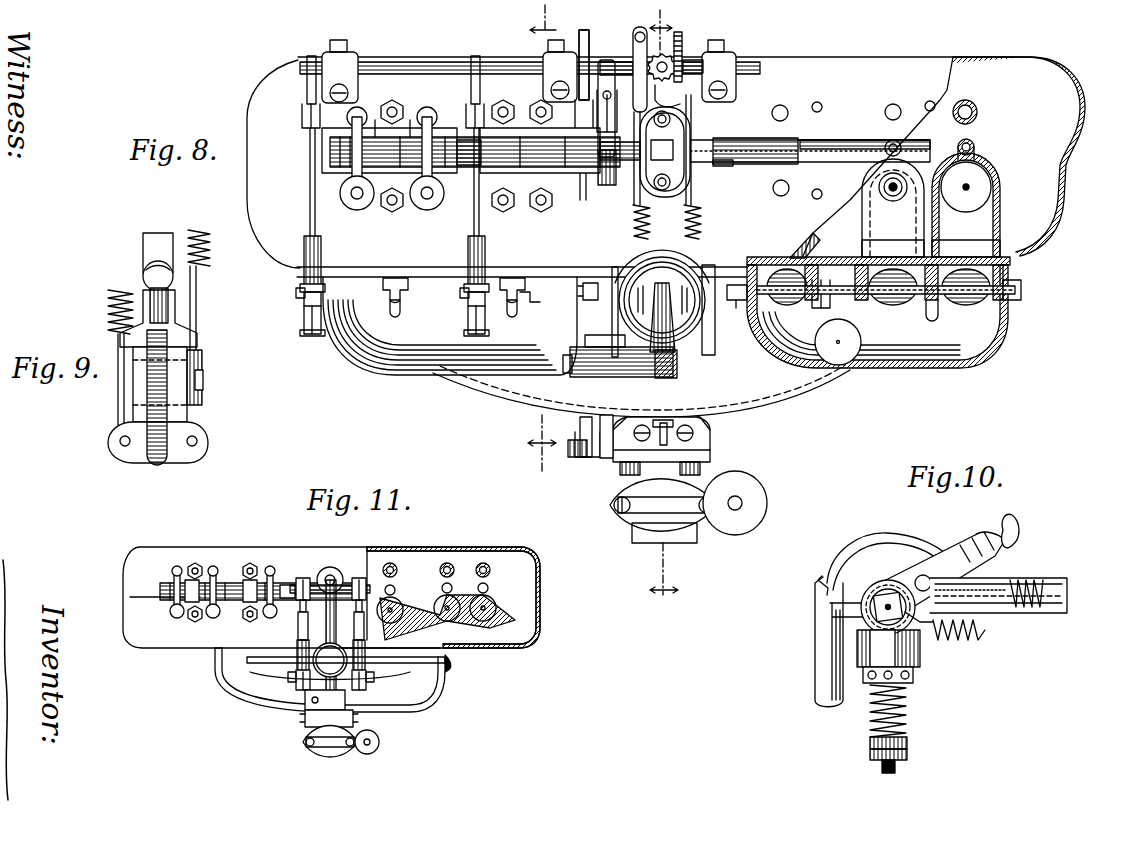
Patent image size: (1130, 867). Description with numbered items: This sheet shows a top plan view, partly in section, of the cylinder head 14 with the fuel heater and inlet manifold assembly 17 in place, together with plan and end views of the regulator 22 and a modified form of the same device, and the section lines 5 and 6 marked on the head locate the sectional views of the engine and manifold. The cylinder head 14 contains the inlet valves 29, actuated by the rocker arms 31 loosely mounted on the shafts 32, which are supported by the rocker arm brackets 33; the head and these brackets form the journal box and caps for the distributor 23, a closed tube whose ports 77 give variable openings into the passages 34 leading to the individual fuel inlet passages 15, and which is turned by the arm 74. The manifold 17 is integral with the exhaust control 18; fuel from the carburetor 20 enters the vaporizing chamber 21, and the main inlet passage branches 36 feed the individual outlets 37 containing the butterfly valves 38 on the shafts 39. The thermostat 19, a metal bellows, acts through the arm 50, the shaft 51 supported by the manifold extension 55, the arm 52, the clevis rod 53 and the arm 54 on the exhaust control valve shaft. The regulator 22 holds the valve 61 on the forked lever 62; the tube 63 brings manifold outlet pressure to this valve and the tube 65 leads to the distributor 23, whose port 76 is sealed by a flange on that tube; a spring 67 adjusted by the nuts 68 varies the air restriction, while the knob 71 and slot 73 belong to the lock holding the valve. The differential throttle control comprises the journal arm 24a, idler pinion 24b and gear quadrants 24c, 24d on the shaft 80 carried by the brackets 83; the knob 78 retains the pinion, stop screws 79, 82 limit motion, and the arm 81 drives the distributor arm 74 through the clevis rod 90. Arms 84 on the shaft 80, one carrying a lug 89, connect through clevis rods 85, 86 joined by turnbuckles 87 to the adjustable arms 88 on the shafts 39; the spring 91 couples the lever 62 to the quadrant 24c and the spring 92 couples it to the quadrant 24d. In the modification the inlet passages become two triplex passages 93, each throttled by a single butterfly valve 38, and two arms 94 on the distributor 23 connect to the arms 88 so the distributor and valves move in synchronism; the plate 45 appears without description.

In FIG. 8, the section line 5— 5 is at (664, 310).
In FIG. 8, the section line 6— 6 is at (542, 238).
In FIG. 8, the cylinder head 14 is at (865, 89).
In FIG. 11, the cylinder head 14 is at (347, 558).
In FIG. 8, the individual fuel inlet passages 15 is at (690, 180).
In FIG. 8, the fuel heater and inlet manifold assembly 17 is at (662, 417).
In FIG. 8, the exhaust control 18 is at (710, 338).
In FIG. 8, the thermostat 19 is at (662, 296).
In FIG. 11, the thermostat 19 is at (330, 660).
In FIG. 8, the carburetor 20 is at (688, 507).
In FIG. 11, the carburetor 20 is at (325, 758).
In FIG. 8, the vaporizing chamber 21 is at (710, 425).
In FIG. 8, the regulator 22 is at (665, 420).
In FIG. 10, the regulator 22 is at (886, 561).
In FIG. 11, the regulator 22 is at (308, 727).
In FIG. 8, the distributor 23 is at (748, 139).
In FIG. 11, the distributor 23 is at (288, 585).
In FIG. 8, the journal arm 24a is at (680, 104).
In FIG. 8, the idler pinion 24b is at (680, 33).
In FIG. 8, the gear quadrant 24c is at (615, 62).
In FIG. 8, the gear quadrant 24d is at (692, 60).
In FIG. 8, the inlet valves 29 is at (964, 174).
In FIG. 11, the inlet valves 29 is at (396, 612).
In FIG. 8, the rocker arms 31 is at (360, 108).
In FIG. 11, the rocker arms 31 is at (177, 565).
In FIG. 8, the shafts 32 is at (468, 151).
In FIG. 8, the rocker arm brackets 33 is at (452, 208).
In FIG. 11, the rocker arm brackets 33 is at (223, 580).
In FIG. 8, the passages 34 is at (890, 140).
In FIG. 11, the passages 34 is at (396, 590).
In FIG. 8, the main inlet passage branches 36 is at (462, 386).
In FIG. 11, the main inlet passage branches 36 is at (246, 690).
In FIG. 8, the individual outlets 37 is at (360, 290).
In FIG. 8, the butterfly valves 38 is at (955, 305).
In FIG. 11, the butterfly valves 38 is at (449, 665).
In FIG. 8, the shafts 39 is at (905, 303).
In FIG. 11, the shafts 39 is at (238, 680).
In FIG. 8, the plate 45 is at (606, 460).
In FIG. 8, the arm 50 is at (672, 317).
In FIG. 8, the shaft 51 is at (678, 365).
In FIG. 8, the arm 52 is at (567, 373).
In FIG. 11, the arm 52 is at (305, 700).
In FIG. 8, the clevis rod 53 is at (580, 421).
In FIG. 8, the arm 54 is at (578, 457).
In FIG. 8, the manifold extension 55 is at (621, 356).
In FIG. 8, the valve 61 is at (605, 93).
In FIG. 10, the valve 61 is at (922, 645).
In FIG. 9, the forked lever 62 is at (175, 305).
In FIG. 10, the forked lever 62 is at (925, 550).
In FIG. 10, the tube 63 is at (827, 666).
In FIG. 9, the tube 65 is at (158, 240).
In FIG. 10, the tube 65 is at (1060, 612).
In FIG. 11, the tube 65 is at (324, 651).
In FIG. 10, the spring 67 is at (908, 708).
In FIG. 10, the nuts 68 is at (910, 745).
In FIG. 9, the knob 71 is at (144, 272).
In FIG. 10, the knob 71 is at (1016, 523).
In FIG. 9, the slot 73 is at (158, 464).
In FIG. 10, the slot 73 is at (820, 577).
In FIG. 8, the arm 74 is at (605, 188).
In FIG. 8, the port 76 is at (720, 162).
In FIG. 8, the ports 77 is at (785, 140).
In FIG. 8, the knob 78 is at (658, 56).
In FIG. 8, the adjustable stop screw 79 is at (619, 99).
In FIG. 8, the shaft 80 is at (408, 62).
In FIG. 8, the arm 81 is at (614, 60).
In FIG. 8, the adjustable stop screw 82 is at (634, 30).
In FIG. 8, the brackets 83 is at (529, 71).
In FIG. 8, the arms 84 is at (306, 94).
In FIG. 8, the clevis rod 85 is at (309, 212).
In FIG. 11, the clevis rod 85 is at (297, 628).
In FIG. 8, the clevis rod 86 is at (304, 328).
In FIG. 11, the clevis rod 86 is at (367, 682).
In FIG. 8, the turnbuckles 87 is at (321, 250).
In FIG. 8, the adjustable arms 88 is at (304, 298).
In FIG. 11, the adjustable arms 88 is at (290, 682).
In FIG. 8, the lug 89 is at (585, 30).
In FIG. 8, the clevis rod 90 is at (614, 114).
In FIG. 8, the spring 91 is at (634, 227).
In FIG. 9, the spring 91 is at (110, 320).
In FIG. 10, the spring 91 is at (986, 632).
In FIG. 8, the spring 92 is at (699, 232).
In FIG. 9, the spring 92 is at (211, 250).
In FIG. 10, the spring 92 is at (1045, 590).
In FIG. 11, the triplex passages 93 is at (447, 617).
In FIG. 11, the arms 94 is at (303, 578).